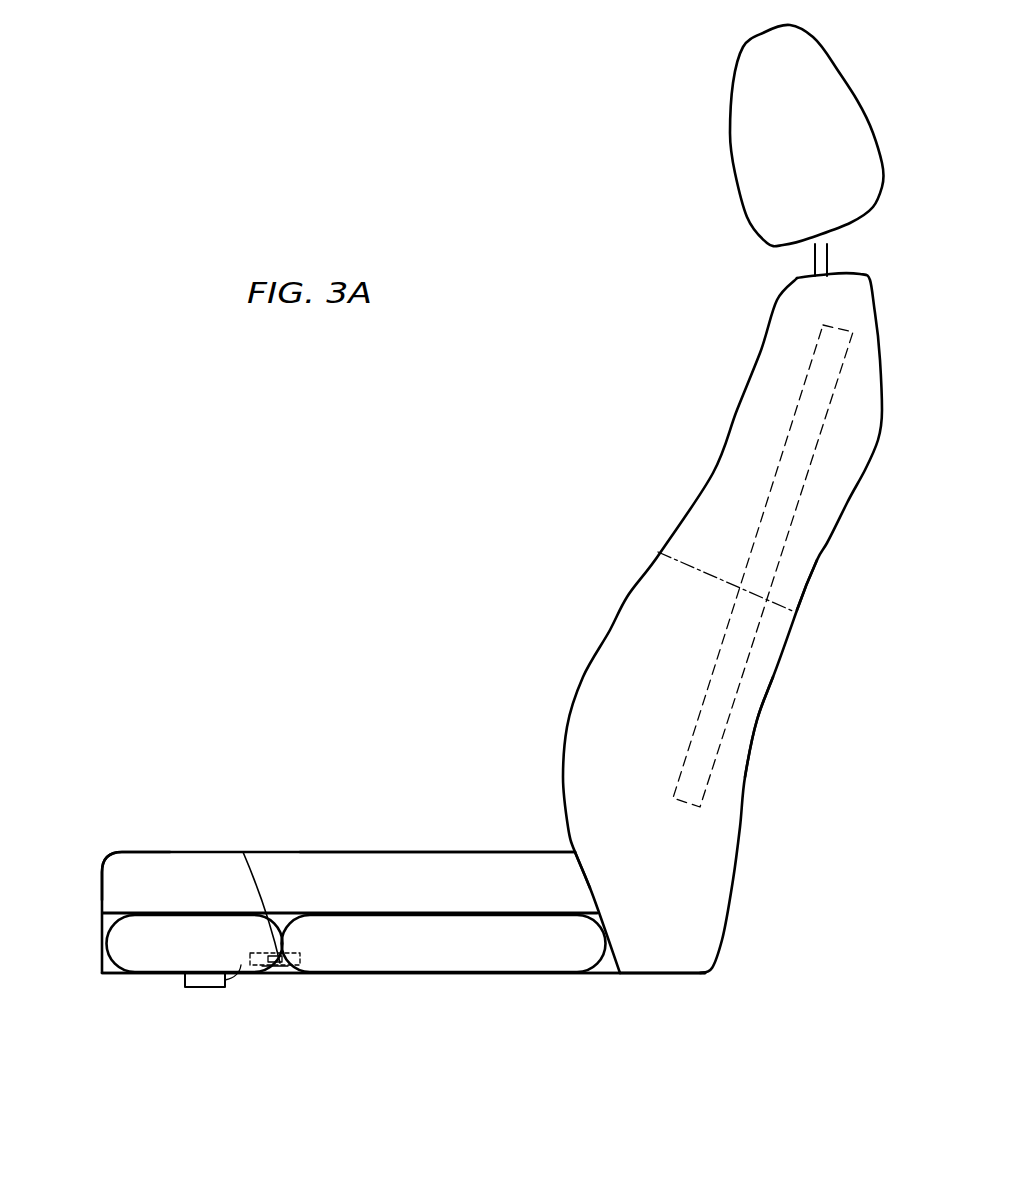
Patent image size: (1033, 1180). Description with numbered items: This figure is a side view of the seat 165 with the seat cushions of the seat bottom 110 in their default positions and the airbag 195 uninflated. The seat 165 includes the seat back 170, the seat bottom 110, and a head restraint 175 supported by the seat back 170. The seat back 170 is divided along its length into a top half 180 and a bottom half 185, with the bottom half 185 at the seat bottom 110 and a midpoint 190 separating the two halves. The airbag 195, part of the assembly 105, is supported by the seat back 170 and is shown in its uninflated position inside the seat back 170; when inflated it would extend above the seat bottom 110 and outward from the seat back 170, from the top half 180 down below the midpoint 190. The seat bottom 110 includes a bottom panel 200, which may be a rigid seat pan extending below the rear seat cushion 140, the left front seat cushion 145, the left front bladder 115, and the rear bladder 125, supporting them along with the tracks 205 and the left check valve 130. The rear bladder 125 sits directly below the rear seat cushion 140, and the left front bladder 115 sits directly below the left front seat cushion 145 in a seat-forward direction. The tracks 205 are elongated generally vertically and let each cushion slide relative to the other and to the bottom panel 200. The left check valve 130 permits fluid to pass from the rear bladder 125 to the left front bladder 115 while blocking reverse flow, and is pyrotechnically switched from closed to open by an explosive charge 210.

The assembly 105 is at (791, 952).
The seat bottom 110 is at (371, 840).
The left front bladder 115 is at (122, 942).
The rear bladder 125 is at (552, 953).
The left check valve 130 is at (273, 965).
The rear seat cushion 140 is at (455, 852).
The left front seat cushion 145 is at (175, 852).
The seat 165 is at (571, 97).
The seat back 170 is at (876, 312).
The head restraint 175 is at (826, 50).
The top half 180 is at (820, 560).
The bottom half 185 is at (760, 712).
The midpoint 190 is at (693, 568).
The airbag 195 is at (810, 477).
The bottom panel 200 is at (433, 973).
The tracks 205 is at (253, 875).
The explosive charge 210 is at (197, 987).